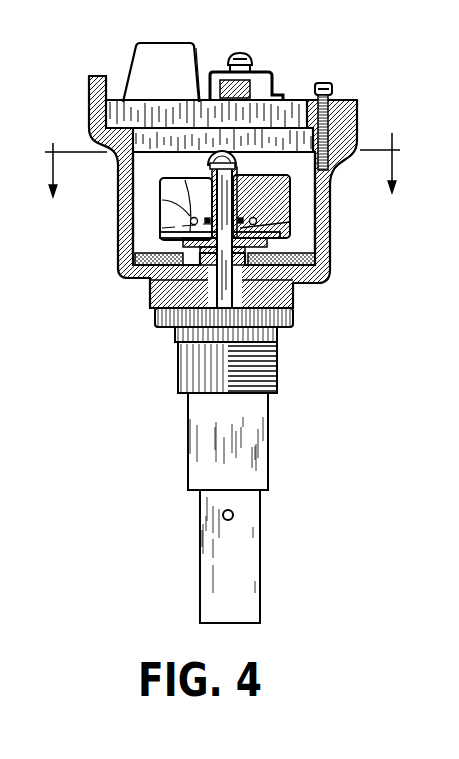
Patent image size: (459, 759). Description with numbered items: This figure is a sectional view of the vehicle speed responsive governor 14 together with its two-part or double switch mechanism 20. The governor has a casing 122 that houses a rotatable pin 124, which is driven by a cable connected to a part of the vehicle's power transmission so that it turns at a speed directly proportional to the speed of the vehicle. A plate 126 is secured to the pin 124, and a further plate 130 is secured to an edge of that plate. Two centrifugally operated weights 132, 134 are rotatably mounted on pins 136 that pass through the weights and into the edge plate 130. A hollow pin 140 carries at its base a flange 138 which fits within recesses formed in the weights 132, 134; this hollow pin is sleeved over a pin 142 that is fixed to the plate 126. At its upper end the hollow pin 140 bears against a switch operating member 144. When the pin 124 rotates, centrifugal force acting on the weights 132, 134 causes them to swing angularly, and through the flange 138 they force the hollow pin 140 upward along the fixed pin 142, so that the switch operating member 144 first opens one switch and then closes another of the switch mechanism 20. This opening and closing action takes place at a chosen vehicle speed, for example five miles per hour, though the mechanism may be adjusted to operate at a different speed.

The governor 14 is at (333, 282).
The double switch mechanism 20 is at (281, 99).
The casing 122 is at (120, 257).
The rotatable pin 124 is at (221, 293).
The plate 126 is at (297, 281).
The plate 130 is at (160, 187).
The centrifugally operated weight 132 is at (213, 178).
The centrifugally operated weight 134 is at (281, 177).
The pin 136 is at (186, 221).
The flange 138 is at (191, 219).
The hollow pin 140 is at (238, 171).
The pin 142 is at (189, 206).
The switch operating member 144 is at (221, 152).